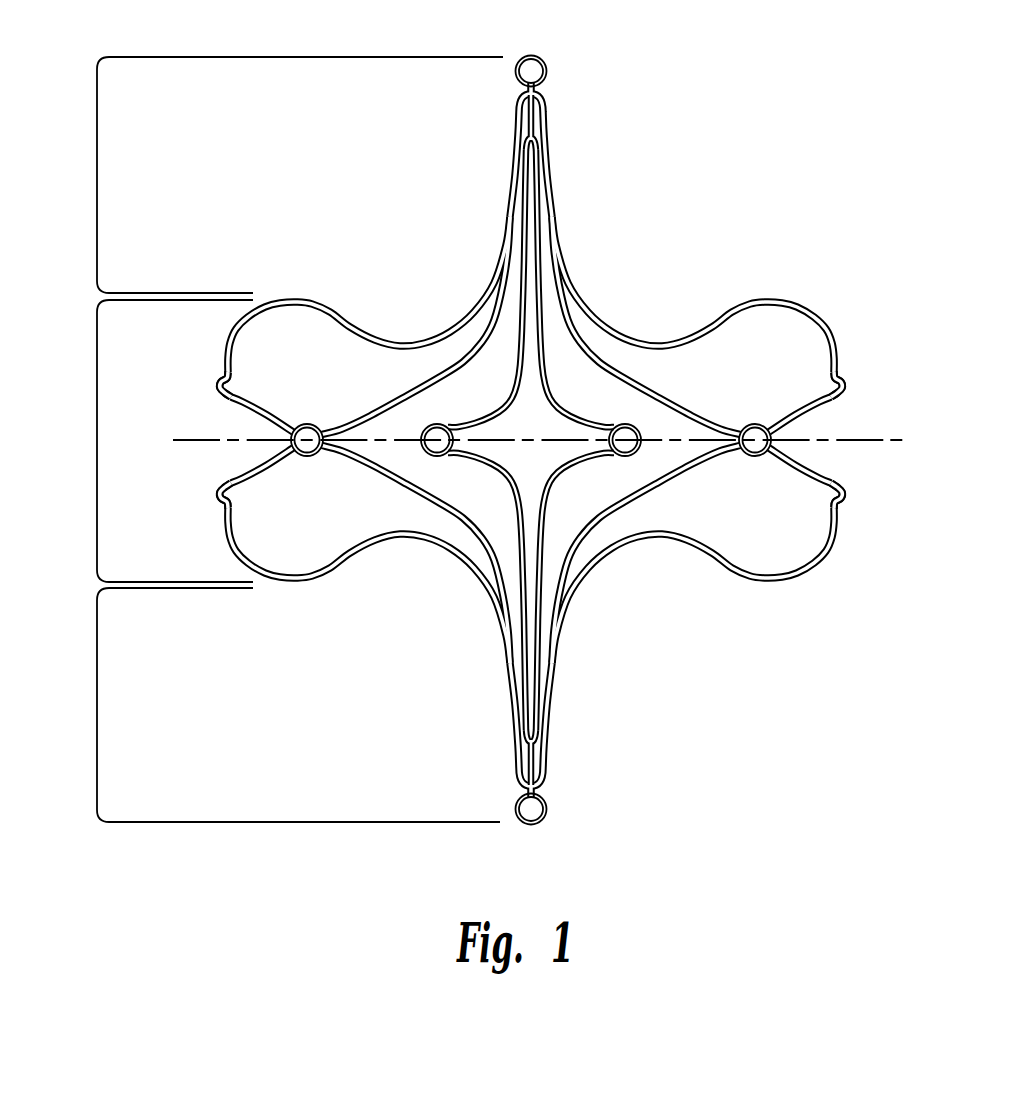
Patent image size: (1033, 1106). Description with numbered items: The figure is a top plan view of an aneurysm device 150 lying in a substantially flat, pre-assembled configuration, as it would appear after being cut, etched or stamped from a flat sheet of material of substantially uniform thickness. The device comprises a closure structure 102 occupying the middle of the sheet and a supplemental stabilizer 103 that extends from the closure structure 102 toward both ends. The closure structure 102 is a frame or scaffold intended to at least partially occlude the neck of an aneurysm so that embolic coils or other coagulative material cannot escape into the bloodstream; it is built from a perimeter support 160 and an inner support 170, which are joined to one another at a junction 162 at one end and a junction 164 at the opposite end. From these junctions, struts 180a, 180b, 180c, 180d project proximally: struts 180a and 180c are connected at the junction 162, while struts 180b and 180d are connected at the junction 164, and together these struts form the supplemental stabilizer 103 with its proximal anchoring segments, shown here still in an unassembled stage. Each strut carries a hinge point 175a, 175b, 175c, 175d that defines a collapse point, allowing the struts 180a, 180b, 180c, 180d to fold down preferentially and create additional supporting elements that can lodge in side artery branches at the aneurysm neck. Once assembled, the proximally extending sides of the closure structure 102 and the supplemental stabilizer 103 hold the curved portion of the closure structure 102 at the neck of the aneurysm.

The aneurysm device 150 is at (538, 432).
The closure structure 102 is at (97, 440).
The supplemental stabilizer 103 is at (97, 172).
The perimeter support 160 is at (683, 400).
The inner support 170 is at (557, 387).
The junction 162 is at (530, 56).
The junction 164 is at (540, 820).
The hinge point 175a is at (221, 388).
The hinge point 175b is at (225, 492).
The hinge point 175c is at (840, 388).
The hinge point 175d is at (841, 494).
The strut 180a is at (342, 316).
The strut 180b is at (323, 574).
The strut 180c is at (735, 300).
The strut 180d is at (733, 574).